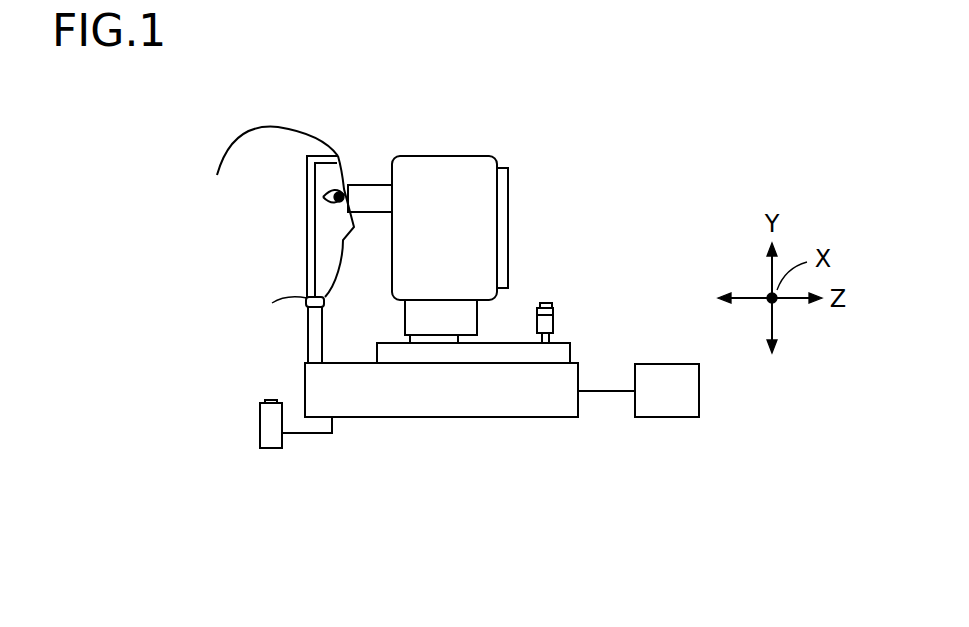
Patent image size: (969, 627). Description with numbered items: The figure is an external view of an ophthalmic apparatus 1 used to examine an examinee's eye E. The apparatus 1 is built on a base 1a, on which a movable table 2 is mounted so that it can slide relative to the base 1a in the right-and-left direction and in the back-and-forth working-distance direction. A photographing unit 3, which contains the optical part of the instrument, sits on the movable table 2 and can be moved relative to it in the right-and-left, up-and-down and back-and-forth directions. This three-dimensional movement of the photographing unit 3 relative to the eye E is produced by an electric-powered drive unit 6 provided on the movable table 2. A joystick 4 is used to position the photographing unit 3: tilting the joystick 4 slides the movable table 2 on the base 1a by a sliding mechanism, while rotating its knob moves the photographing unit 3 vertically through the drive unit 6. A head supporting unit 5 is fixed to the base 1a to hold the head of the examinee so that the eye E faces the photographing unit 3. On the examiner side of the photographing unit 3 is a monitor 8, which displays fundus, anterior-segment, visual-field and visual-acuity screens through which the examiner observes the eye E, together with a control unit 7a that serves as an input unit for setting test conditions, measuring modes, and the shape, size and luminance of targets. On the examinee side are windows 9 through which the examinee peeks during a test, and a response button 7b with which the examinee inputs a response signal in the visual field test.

The ophthalmic apparatus 1 is at (612, 188).
The base 1a is at (490, 382).
The movable table 2 is at (560, 353).
The photographing unit 3 is at (470, 168).
The joystick 4 is at (552, 325).
The head supporting unit 5 is at (292, 319).
The drive unit 6 is at (463, 320).
The control unit 7a is at (672, 390).
The response button 7b is at (273, 433).
The monitor 8 is at (502, 233).
The windows 9 is at (373, 192).
The examinee's eye E is at (344, 190).